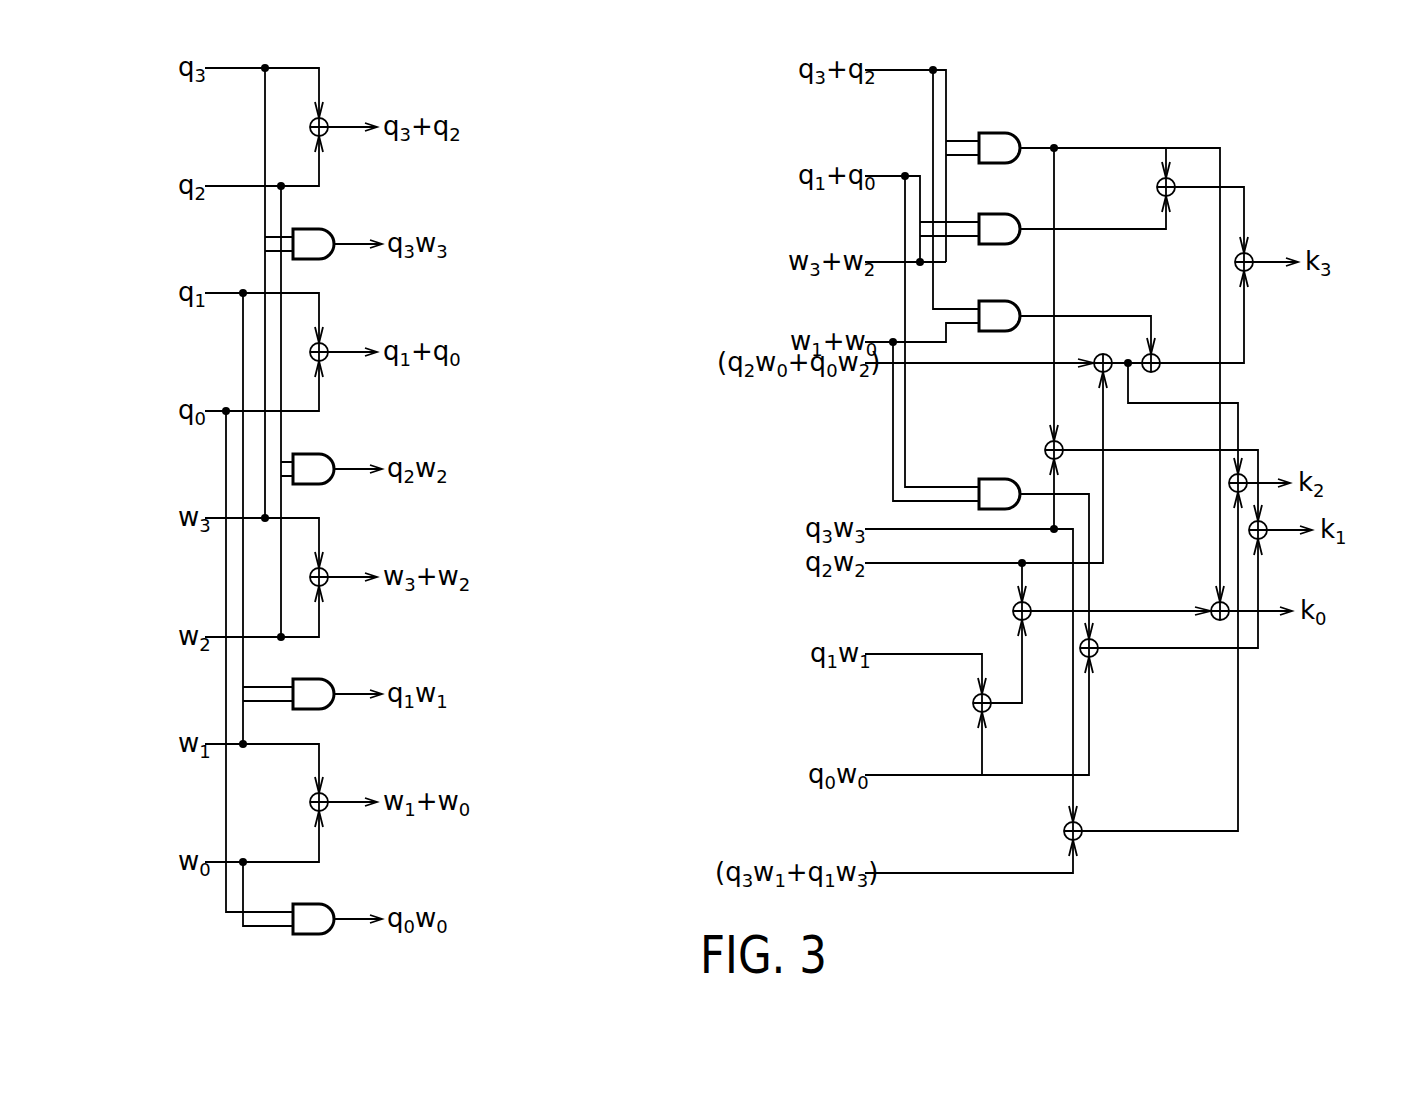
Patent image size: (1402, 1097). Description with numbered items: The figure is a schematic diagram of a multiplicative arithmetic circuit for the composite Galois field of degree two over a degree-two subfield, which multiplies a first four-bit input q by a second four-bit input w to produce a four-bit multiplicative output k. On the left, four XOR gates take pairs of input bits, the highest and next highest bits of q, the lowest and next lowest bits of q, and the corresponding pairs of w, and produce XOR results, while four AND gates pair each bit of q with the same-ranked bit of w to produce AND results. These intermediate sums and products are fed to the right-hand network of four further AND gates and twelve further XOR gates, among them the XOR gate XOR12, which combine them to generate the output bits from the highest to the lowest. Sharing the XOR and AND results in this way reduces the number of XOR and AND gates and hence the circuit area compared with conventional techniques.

The XOR gate XOR12 is at (1013, 610).